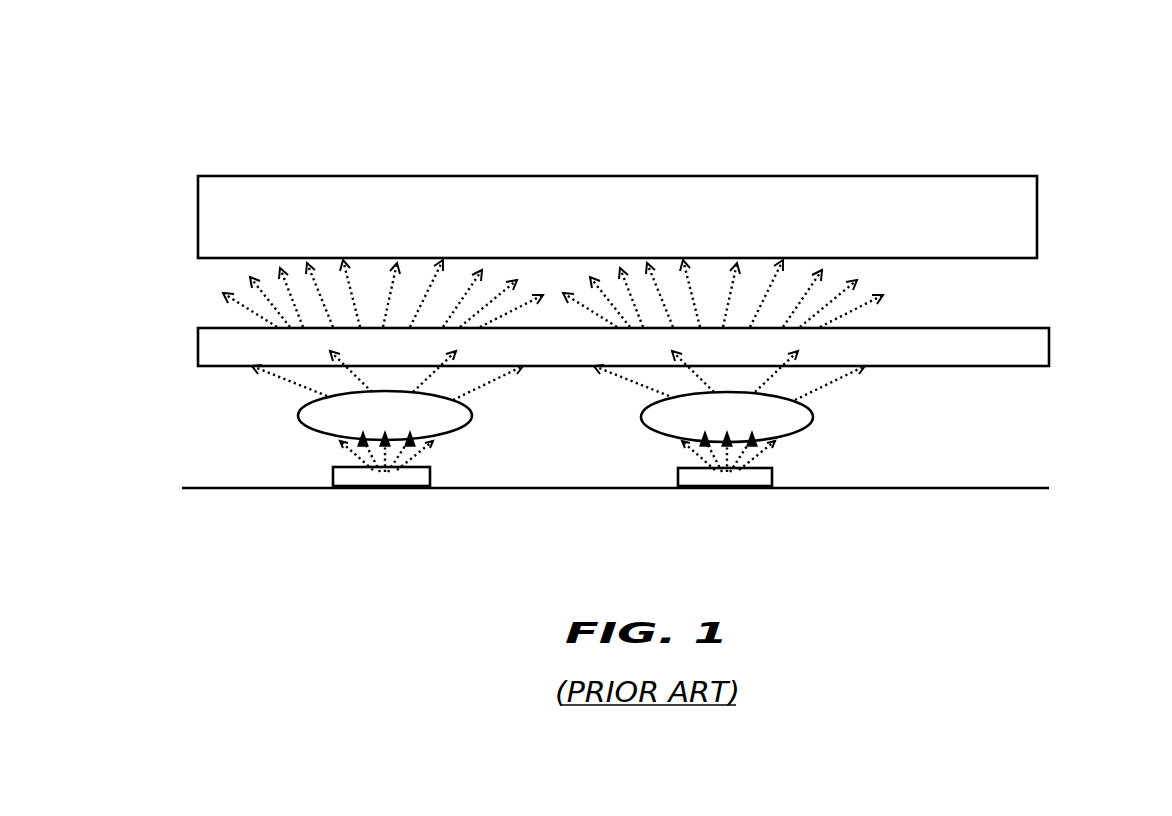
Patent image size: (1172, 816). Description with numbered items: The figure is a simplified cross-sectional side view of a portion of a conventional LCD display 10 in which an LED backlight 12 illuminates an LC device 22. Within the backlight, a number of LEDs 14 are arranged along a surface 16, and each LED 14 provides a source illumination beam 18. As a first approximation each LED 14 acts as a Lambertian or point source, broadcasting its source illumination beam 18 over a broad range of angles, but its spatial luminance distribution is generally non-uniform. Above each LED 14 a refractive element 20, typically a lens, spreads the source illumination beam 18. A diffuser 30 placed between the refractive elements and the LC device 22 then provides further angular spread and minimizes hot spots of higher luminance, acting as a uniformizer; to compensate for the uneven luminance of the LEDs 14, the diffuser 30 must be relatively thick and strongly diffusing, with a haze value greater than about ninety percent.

The LCD display 10 is at (178, 94).
The LED backlight 12 is at (146, 326).
The LED 14 is at (430, 473).
The surface 16 is at (1010, 489).
The source illumination beam 18 is at (331, 448).
The refractive element 20 is at (298, 418).
The LC device 22 is at (842, 176).
The diffuser 30 is at (1049, 345).